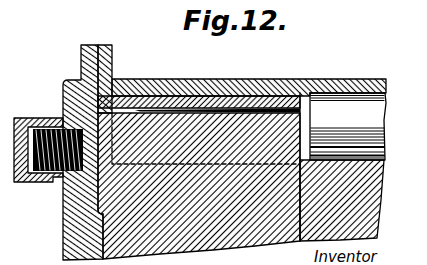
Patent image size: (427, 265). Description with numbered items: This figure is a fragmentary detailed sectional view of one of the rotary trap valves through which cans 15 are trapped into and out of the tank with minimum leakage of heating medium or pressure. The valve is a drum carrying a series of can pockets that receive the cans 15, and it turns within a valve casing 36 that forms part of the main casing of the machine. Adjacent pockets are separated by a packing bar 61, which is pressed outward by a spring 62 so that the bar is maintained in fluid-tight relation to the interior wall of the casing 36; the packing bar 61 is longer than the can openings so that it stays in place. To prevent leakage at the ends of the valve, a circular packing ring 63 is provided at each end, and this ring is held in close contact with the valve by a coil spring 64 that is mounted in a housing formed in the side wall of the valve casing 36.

The cans 15 is at (338, 108).
The valve casing 36 is at (65, 255).
The packing bar 61 is at (152, 100).
The spring 62 is at (293, 97).
The circular packing ring 63 is at (97, 114).
The coil spring 64 is at (30, 177).